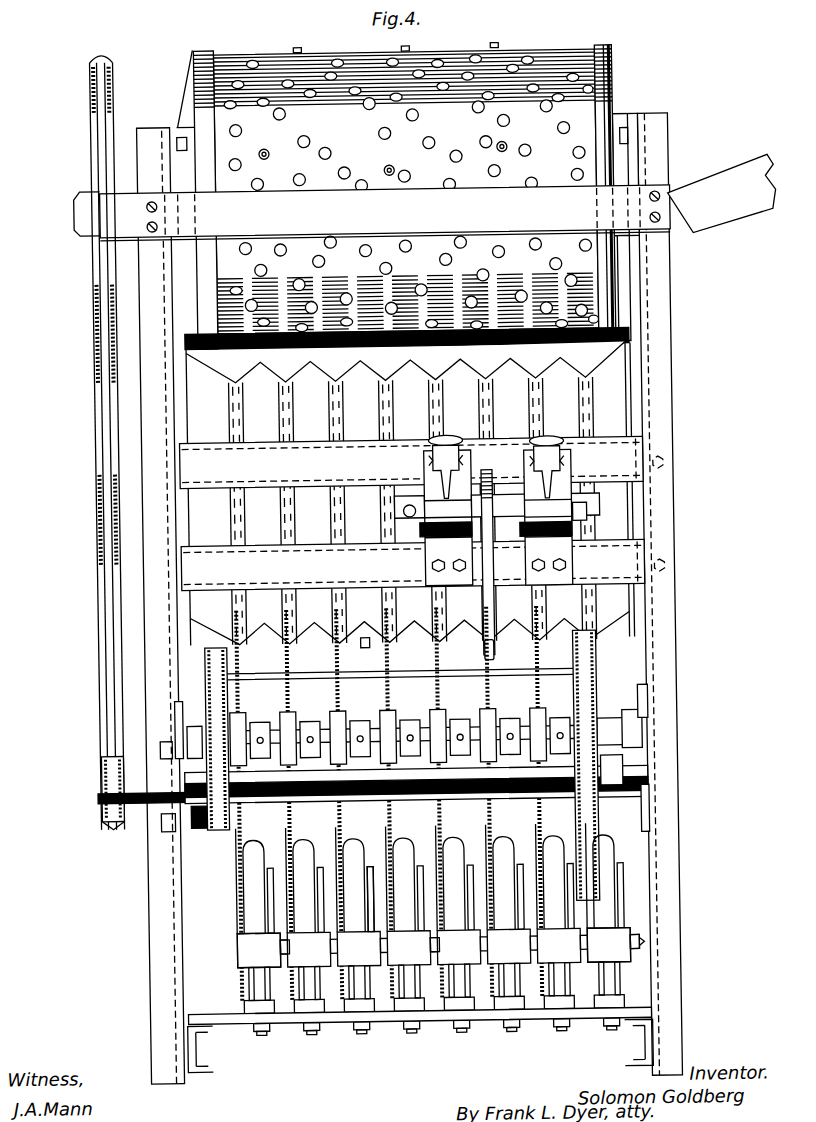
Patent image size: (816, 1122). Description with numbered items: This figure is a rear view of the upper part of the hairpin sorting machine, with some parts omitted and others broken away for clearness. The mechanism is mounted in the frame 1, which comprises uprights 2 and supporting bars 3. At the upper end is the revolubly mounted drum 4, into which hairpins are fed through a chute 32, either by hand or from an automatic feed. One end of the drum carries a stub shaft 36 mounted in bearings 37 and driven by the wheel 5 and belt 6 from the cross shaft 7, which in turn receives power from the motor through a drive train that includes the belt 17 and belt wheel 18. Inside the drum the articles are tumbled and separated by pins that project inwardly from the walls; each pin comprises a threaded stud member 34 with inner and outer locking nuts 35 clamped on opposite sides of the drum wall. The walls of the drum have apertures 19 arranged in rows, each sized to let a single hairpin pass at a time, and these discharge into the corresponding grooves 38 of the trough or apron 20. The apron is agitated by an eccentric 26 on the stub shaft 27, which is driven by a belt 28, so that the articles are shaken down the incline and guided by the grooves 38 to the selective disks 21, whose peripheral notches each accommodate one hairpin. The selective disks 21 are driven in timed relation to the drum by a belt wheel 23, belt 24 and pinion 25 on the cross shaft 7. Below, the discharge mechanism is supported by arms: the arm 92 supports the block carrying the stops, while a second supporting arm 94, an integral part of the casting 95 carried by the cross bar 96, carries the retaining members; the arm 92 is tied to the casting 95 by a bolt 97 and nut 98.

The frame 1 is at (673, 995).
The uprights 2 is at (149, 916).
The supporting bars 3 is at (199, 1027).
The drum 4 is at (230, 53).
The wheel 5 is at (121, 78).
The belt 6 is at (103, 371).
The cross shaft 7 is at (109, 793).
The belt 17 is at (584, 865).
The belt wheel 18 is at (596, 693).
The apertures 19 is at (583, 50).
The trough or apron 20 is at (615, 393).
The selective disk 21 is at (337, 691).
The belt wheel 23 is at (209, 657).
The belt 24 is at (196, 829).
The pinion 25 is at (98, 775).
The eccentric 26 is at (426, 556).
The stub shaft 27 is at (581, 508).
The belt 28 is at (488, 483).
The chute 32 is at (727, 185).
The threaded stud member 34 is at (304, 48).
The locking nut 35 is at (501, 47).
The stub shaft 36 is at (84, 227).
The bearings 37 is at (194, 114).
The grooves 38 is at (371, 651).
The arm 92 is at (449, 963).
The supporting arm 94 is at (307, 910).
The casting 95 is at (244, 975).
The cross bar 96 is at (383, 1018).
The bolt 97 is at (292, 964).
The nut 98 is at (389, 965).